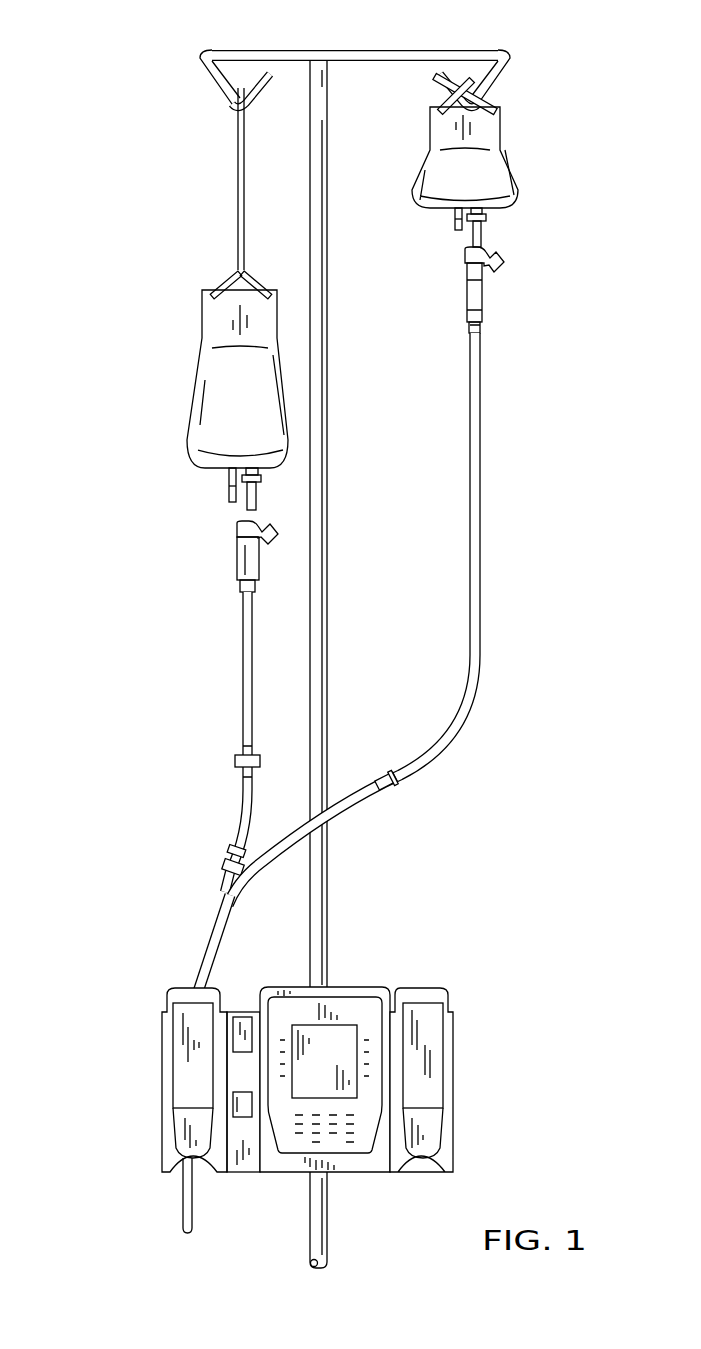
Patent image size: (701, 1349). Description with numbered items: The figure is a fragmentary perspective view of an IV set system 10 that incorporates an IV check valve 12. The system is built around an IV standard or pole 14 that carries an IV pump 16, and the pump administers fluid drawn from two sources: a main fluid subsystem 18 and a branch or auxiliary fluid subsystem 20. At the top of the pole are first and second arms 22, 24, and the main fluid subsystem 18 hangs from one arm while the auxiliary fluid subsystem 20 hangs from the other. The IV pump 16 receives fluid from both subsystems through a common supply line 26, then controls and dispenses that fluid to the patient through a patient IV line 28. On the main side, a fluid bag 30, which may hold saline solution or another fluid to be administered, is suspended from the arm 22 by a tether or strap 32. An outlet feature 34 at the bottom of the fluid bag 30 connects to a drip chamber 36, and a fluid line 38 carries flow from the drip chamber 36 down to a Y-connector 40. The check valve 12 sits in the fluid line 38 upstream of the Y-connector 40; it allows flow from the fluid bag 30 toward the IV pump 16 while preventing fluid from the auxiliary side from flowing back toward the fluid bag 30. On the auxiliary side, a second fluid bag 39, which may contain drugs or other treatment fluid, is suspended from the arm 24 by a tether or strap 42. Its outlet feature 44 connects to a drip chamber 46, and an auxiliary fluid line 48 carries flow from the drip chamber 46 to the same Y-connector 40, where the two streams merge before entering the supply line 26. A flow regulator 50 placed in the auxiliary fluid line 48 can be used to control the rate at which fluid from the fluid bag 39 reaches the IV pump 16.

The IV set system 10 is at (76, 84).
The IV check valve 12 is at (235, 762).
The IV standard or pole 14 is at (330, 433).
The IV pump 16 is at (352, 1005).
The main fluid subsystem 18 is at (200, 250).
The branch or auxiliary fluid subsystem 20 is at (522, 78).
The first arm 22 is at (272, 50).
The second arm 24 is at (380, 50).
The supply line 26 is at (205, 945).
The patient IV line 28 is at (182, 1190).
The fluid bag 30 is at (213, 368).
The tether or strap 32 is at (240, 133).
The outlet feature 34 is at (240, 480).
The drip chamber 36 is at (238, 557).
The fluid line 38 is at (242, 668).
The fluid bag 39 is at (487, 170).
The Y-connector 40 is at (224, 880).
The tether or strap 42 is at (447, 100).
The outlet feature 44 is at (488, 222).
The drip chamber 46 is at (483, 297).
The auxiliary fluid line 48 is at (480, 483).
The flow regulator 50 is at (378, 792).